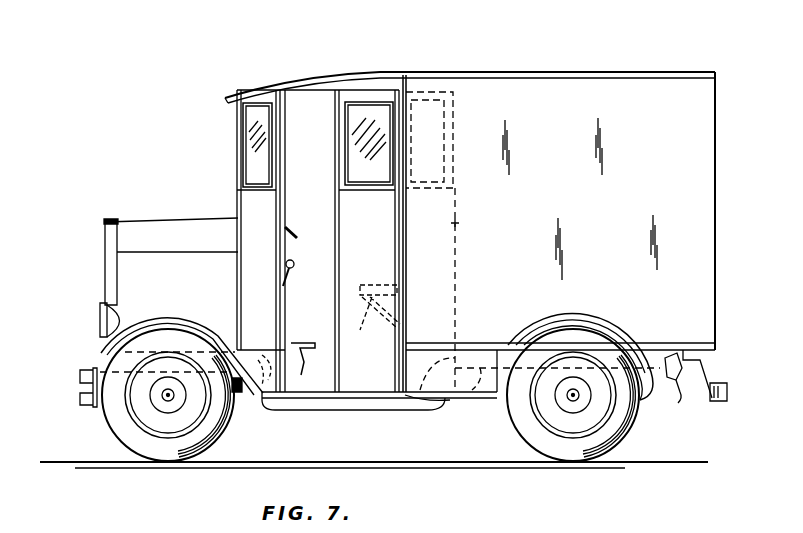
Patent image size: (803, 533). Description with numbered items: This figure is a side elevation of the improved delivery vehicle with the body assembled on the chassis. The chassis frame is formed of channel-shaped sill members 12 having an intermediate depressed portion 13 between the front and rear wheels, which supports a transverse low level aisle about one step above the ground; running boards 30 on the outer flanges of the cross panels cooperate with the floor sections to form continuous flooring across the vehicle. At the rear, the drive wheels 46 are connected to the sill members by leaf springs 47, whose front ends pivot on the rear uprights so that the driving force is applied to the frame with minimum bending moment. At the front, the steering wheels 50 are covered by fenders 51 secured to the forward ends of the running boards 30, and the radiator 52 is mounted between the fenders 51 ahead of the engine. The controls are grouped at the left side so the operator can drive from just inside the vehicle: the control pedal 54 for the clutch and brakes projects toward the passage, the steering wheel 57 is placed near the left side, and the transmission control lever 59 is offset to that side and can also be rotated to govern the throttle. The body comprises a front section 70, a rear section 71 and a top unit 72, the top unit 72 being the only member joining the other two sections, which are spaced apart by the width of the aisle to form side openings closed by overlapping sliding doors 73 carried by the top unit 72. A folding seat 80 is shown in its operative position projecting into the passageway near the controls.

The sill members 12 is at (488, 376).
The depressed portion 13 is at (378, 407).
The running boards 30 is at (478, 398).
The rear wheels 46 is at (620, 428).
The leaf springs 47 is at (668, 396).
The steering wheels 50 is at (118, 430).
The fenders 51 is at (103, 352).
The radiator 52 is at (105, 257).
The control pedal 54 is at (300, 360).
The steering wheel 57 is at (290, 226).
The transmission control lever 59 is at (293, 260).
The front section 70 is at (271, 328).
The rear section 71 is at (690, 335).
The top unit 72 is at (501, 73).
The doors 73 is at (459, 223).
The folding seat 80 is at (366, 318).